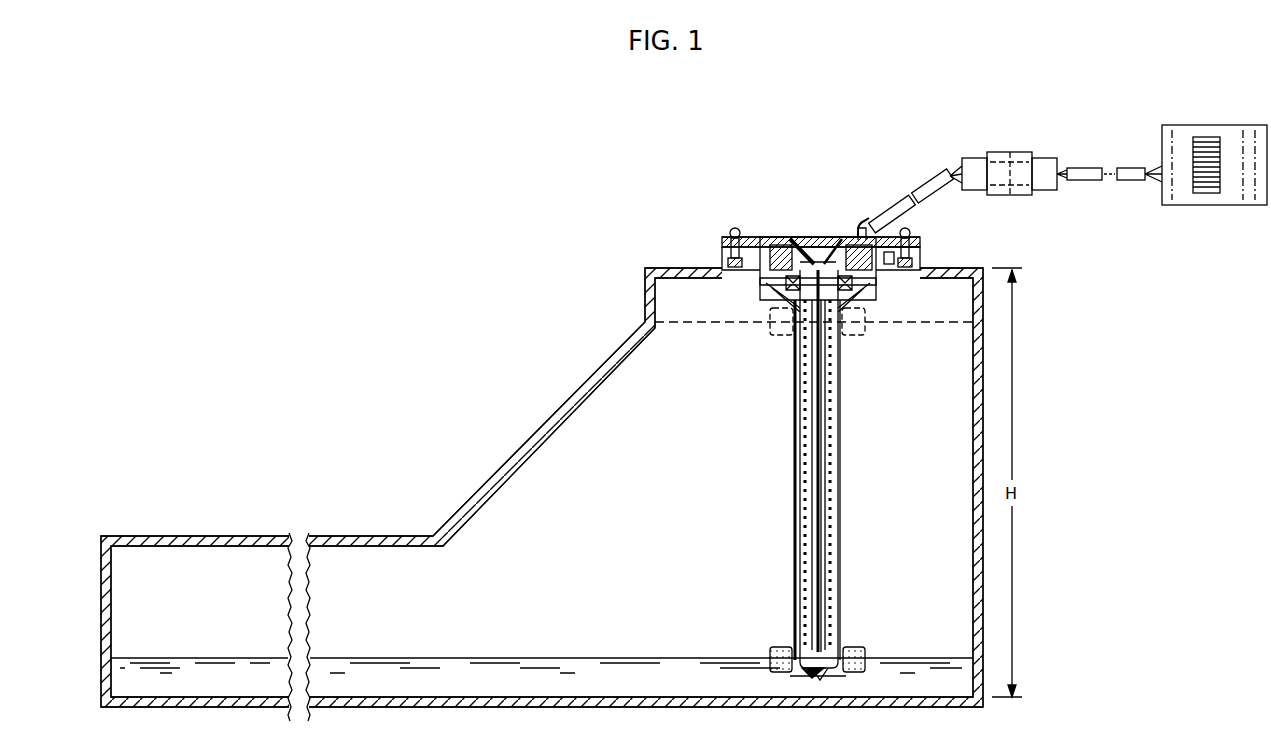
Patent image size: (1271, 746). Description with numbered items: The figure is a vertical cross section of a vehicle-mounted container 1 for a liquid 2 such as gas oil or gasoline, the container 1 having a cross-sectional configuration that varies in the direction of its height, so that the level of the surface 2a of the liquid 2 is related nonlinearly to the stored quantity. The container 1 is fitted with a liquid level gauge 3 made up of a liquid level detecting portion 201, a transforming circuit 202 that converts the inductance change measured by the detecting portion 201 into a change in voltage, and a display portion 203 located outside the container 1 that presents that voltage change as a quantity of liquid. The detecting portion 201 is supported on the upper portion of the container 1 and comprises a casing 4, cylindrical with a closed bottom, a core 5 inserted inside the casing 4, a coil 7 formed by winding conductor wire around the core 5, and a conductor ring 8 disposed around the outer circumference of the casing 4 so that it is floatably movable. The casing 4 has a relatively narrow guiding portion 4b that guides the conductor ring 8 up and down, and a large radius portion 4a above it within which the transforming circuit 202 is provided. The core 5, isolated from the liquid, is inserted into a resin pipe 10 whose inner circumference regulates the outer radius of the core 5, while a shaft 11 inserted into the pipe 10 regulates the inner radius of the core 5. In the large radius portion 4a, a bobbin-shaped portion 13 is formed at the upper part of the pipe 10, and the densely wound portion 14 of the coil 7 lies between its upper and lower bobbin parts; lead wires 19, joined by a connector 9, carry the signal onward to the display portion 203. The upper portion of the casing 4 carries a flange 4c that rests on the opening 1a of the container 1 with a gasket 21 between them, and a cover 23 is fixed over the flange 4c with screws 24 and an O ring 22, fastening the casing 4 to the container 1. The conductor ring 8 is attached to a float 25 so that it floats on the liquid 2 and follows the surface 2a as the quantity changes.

The container 1 is at (494, 471).
The opening 1a is at (722, 267).
The liquid 2 is at (632, 656).
The surface of the liquid 2a is at (731, 656).
The liquid level gauge 3 is at (846, 401).
The casing 4 is at (720, 290).
The large radius portion 4a is at (764, 286).
The guiding portion 4b is at (792, 360).
The flange 4c is at (722, 246).
The core 5 is at (828, 502).
The coil 7 is at (835, 449).
The conductor ring 8 is at (850, 647).
The connector 9 is at (1000, 152).
The pipe 10 is at (808, 492).
The shaft 11 is at (810, 448).
The bobbin-shaped portion 13 is at (863, 320).
The densely wound portion 14 is at (782, 303).
The lead wires 19 is at (924, 185).
The gasket 21 is at (915, 261).
The O ring 22 is at (750, 237).
The cover 23 is at (913, 241).
The screws 24 is at (909, 225).
The float 25 is at (776, 648).
The liquid level detecting portion 201 is at (795, 403).
The transforming circuit 202 is at (864, 289).
The display portion 203 is at (1180, 125).